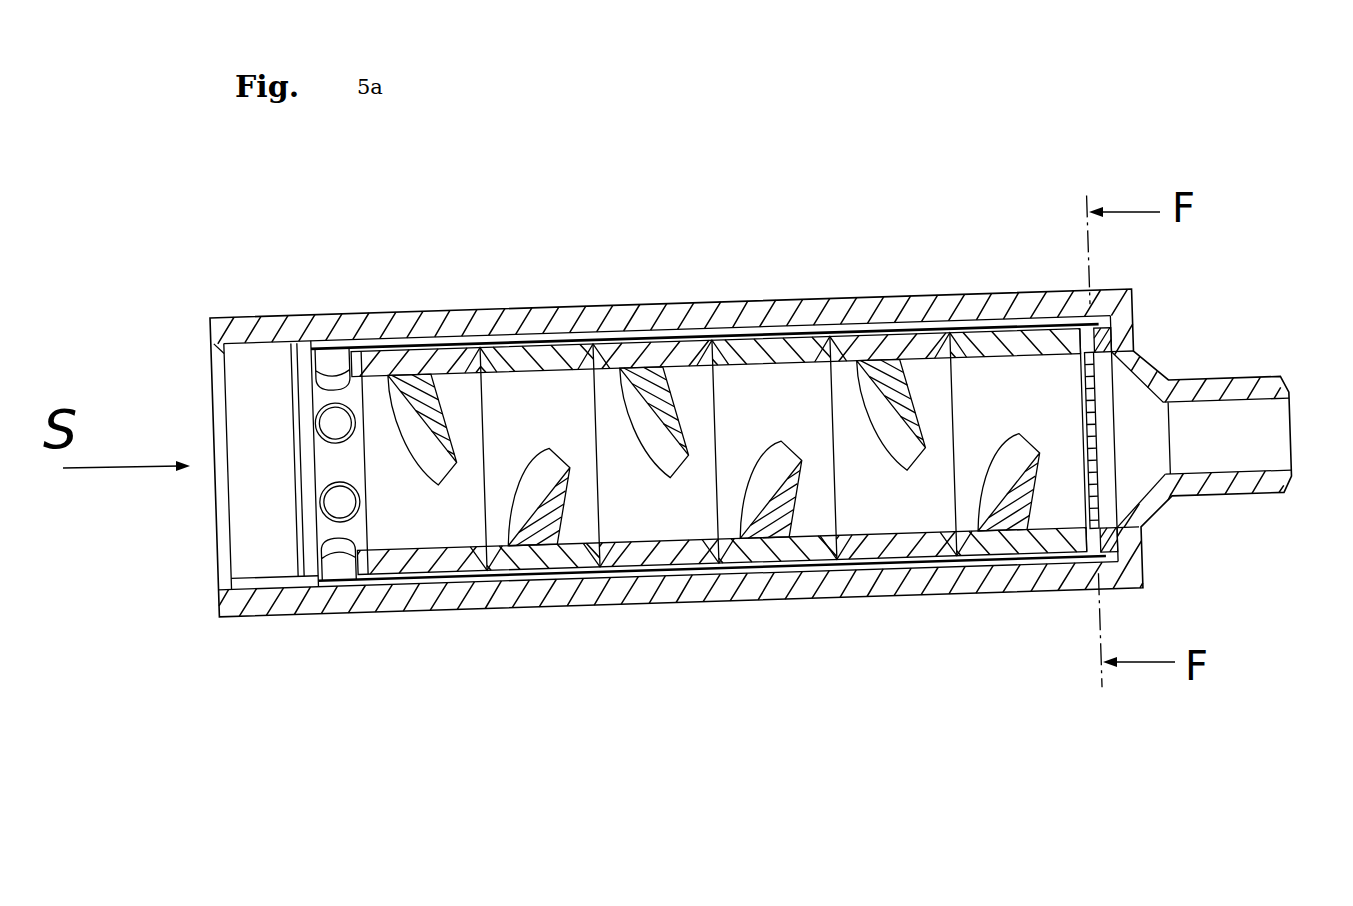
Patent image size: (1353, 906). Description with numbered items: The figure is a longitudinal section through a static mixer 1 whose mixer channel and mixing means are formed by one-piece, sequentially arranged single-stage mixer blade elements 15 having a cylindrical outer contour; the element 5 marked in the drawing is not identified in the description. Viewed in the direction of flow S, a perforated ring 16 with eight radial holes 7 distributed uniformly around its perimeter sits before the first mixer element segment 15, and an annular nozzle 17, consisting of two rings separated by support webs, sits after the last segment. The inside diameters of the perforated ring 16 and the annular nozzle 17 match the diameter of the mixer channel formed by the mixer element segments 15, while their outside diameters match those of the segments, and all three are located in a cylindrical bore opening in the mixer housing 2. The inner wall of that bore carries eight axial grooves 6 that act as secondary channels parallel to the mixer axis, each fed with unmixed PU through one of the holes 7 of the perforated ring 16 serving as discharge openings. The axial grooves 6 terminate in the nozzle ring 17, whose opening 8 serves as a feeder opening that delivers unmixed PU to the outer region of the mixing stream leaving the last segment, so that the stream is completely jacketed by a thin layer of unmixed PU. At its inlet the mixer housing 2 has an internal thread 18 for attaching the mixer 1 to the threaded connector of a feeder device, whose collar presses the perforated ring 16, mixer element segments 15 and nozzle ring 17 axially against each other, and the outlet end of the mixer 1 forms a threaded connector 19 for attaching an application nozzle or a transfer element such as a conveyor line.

The static mixer 1 is at (632, 262).
The mixer housing 2 is at (495, 320).
The inner tube 5 is at (788, 350).
The axial grooves 6 is at (439, 590).
The radial holes 7 is at (329, 433).
The feeder opening 8 is at (1096, 393).
The mixer blade elements 15 is at (730, 517).
The perforated ring 16 is at (328, 398).
The annular nozzle 17 is at (1117, 540).
The internal thread 18 is at (240, 362).
The threaded connector 19 is at (1254, 363).